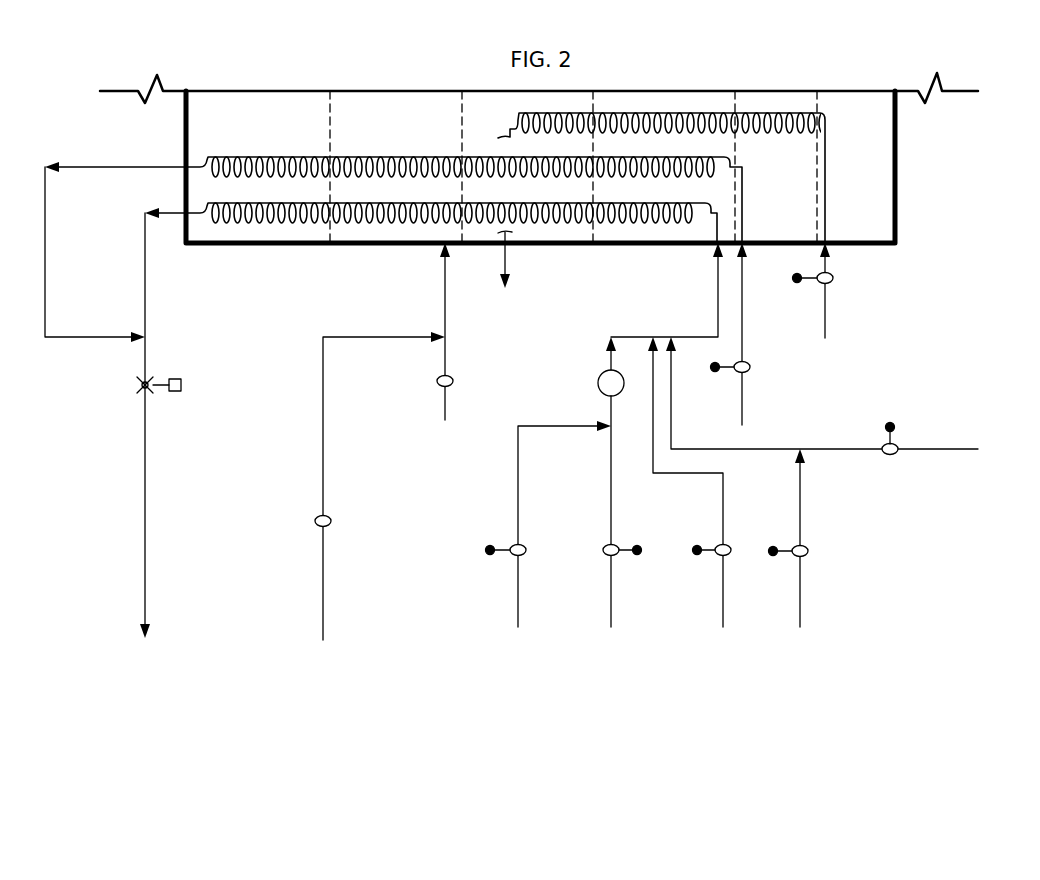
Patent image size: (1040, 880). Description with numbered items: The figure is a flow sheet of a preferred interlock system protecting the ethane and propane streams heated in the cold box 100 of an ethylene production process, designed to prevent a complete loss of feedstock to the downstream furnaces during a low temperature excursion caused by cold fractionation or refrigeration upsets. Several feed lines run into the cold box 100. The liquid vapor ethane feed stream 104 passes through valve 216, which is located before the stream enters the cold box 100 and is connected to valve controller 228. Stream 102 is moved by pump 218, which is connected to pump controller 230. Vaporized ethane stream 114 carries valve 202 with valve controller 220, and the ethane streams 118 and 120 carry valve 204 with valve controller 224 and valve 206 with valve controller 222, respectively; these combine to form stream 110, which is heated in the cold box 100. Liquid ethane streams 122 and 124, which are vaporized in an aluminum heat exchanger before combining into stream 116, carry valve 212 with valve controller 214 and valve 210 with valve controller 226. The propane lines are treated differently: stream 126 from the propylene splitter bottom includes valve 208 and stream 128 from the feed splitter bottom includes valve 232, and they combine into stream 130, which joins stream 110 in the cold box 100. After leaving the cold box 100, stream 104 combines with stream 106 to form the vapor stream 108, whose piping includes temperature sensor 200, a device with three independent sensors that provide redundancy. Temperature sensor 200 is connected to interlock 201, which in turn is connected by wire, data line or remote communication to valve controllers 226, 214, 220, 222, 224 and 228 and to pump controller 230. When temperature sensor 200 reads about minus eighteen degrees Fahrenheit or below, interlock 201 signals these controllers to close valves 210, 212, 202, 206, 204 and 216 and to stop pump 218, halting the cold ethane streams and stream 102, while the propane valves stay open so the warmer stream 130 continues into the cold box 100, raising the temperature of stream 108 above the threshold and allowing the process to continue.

The cold box 100 is at (906, 178).
The stream 102 is at (826, 320).
The liquid vapor ethane mixture feed stream 104 is at (743, 410).
The stream 106 is at (145, 275).
The stream 108 is at (145, 506).
The stream 110 is at (717, 290).
The stream 114 is at (665, 476).
The stream 116 is at (604, 372).
The stream 118 is at (958, 449).
The stream 120 is at (801, 600).
The stream 122 is at (610, 462).
The stream 124 is at (517, 480).
The stream 126 is at (444, 408).
The stream 128 is at (385, 339).
The stream 130 is at (444, 290).
The temperature sensor 200 is at (135, 390).
The interlock 201 is at (176, 392).
The valve 202 is at (730, 546).
The valve 204 is at (896, 455).
The valve 206 is at (808, 556).
The valve 208 is at (452, 385).
The valve 210 is at (524, 556).
The valve 212 is at (604, 546).
The valve controller 214 is at (637, 556).
The valve 216 is at (750, 370).
The pump 218 is at (832, 281).
The valve controller 220 is at (697, 556).
The valve controller 222 is at (773, 556).
The valve controller 224 is at (893, 422).
The valve controller 226 is at (490, 556).
The valve controller 228 is at (715, 373).
The pump controller 230 is at (797, 284).
The valve 232 is at (318, 527).